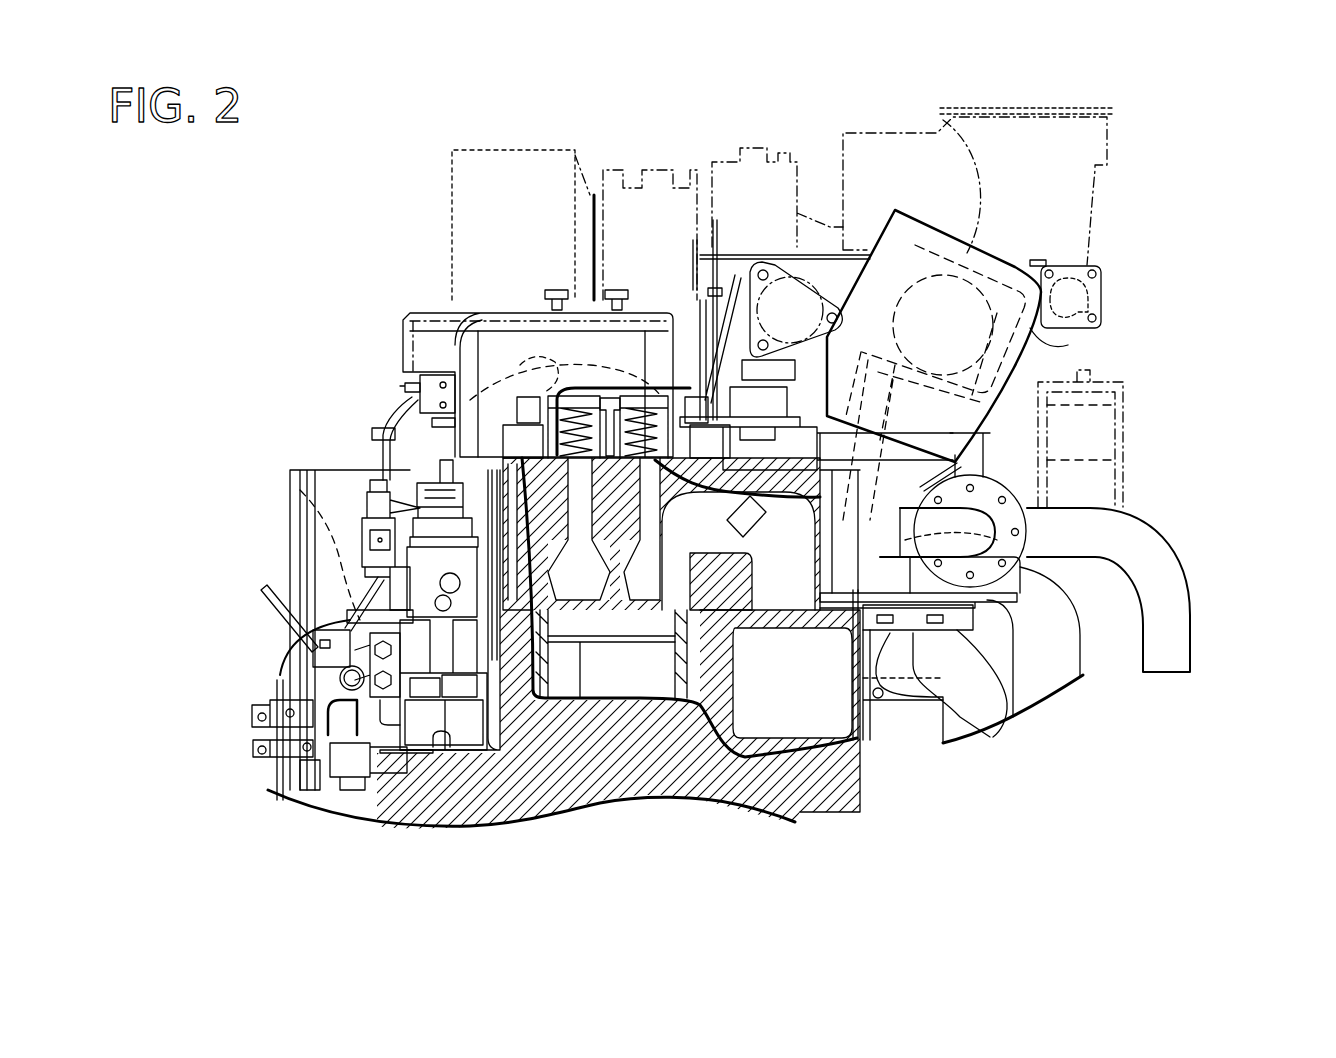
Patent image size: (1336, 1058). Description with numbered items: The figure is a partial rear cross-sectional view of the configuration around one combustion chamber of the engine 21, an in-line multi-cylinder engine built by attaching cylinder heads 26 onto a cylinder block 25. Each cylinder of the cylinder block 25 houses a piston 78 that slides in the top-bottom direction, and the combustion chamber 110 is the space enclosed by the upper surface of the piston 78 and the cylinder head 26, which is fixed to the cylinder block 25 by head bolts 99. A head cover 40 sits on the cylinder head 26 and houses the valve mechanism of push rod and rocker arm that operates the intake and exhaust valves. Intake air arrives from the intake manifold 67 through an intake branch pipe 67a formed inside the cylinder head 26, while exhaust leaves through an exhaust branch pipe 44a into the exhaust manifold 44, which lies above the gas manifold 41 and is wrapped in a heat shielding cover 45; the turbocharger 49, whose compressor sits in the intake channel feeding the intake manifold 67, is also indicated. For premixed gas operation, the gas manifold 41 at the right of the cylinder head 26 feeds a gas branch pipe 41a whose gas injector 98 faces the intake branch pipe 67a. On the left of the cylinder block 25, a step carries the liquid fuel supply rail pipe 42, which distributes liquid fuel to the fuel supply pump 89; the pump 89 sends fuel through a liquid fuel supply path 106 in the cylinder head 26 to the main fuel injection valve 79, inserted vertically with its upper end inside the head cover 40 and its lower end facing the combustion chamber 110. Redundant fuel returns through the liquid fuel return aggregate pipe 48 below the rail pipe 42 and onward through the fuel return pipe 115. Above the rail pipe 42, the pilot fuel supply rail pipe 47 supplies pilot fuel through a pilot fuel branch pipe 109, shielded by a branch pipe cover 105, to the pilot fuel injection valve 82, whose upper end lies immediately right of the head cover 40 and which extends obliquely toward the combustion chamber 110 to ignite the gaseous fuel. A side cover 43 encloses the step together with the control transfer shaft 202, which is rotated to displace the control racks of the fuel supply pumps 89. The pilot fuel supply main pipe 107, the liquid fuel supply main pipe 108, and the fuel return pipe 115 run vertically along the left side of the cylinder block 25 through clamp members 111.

The engine 21 is at (1238, 190).
The cylinder block 25 is at (975, 735).
The cylinder head 26 is at (1045, 568).
The head cover 40 is at (482, 345).
The gas manifold 41 is at (1030, 490).
The gas branch pipe 41a is at (990, 450).
The liquid fuel supply rail pipe 42 is at (260, 592).
The side cover 43 is at (300, 492).
The exhaust manifold 44 is at (1078, 347).
The exhaust branch pipe 44a is at (1100, 404).
The heat shielding cover 45 is at (978, 270).
The pilot fuel supply rail pipe 47 is at (330, 522).
The liquid fuel return aggregate pipe 48 is at (312, 634).
The turbocharger 49 is at (448, 162).
The intake manifold 67 is at (800, 730).
The intake branch pipe 67a is at (843, 747).
The piston 78 is at (535, 700).
The main fuel injection valve 79 is at (580, 650).
The pilot fuel injection valve 82 is at (657, 673).
The fuel supply pump 89 is at (365, 570).
The gas injector 98 is at (756, 529).
The head bolt 99 is at (522, 400).
The branch pipe cover 105 is at (435, 330).
The liquid fuel supply path 106 is at (374, 436).
The pilot fuel supply main pipe 107 is at (270, 778).
The liquid fuel supply main pipe 108 is at (302, 792).
The pilot fuel branch pipe 109 is at (728, 250).
The combustion chamber 110 is at (630, 650).
The clamp member 111 is at (253, 718).
The fuel return pipe 115 is at (332, 800).
The control transfer shaft 202 is at (310, 668).